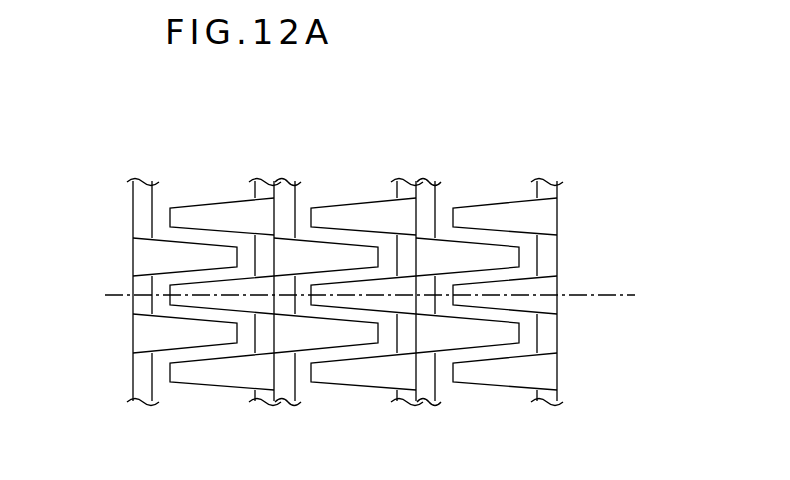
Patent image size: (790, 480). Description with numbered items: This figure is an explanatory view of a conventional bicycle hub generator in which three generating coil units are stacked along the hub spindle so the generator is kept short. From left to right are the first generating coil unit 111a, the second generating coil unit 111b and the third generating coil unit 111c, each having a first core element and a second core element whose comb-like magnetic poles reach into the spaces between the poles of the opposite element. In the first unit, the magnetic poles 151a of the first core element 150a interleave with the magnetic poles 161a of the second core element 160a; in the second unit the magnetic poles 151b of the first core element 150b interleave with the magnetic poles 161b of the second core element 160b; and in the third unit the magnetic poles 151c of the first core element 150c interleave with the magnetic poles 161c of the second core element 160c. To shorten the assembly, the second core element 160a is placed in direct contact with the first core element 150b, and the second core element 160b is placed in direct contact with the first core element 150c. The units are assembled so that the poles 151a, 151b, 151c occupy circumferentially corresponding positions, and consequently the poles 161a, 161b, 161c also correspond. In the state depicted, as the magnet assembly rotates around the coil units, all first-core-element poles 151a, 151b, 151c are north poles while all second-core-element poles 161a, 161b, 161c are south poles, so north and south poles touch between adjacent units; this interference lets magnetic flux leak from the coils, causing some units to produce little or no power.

The first generating coil unit 111a is at (197, 183).
The second generating coil unit 111b is at (356, 183).
The third generating coil unit 111c is at (480, 186).
The first core element 150a is at (125, 372).
The first core element 150b is at (297, 390).
The first core element 150c is at (440, 392).
The magnetic poles 151a is at (182, 253).
The magnetic poles 151b is at (337, 257).
The magnetic poles 151c is at (503, 258).
The second core element 160a is at (222, 388).
The second core element 160b is at (344, 389).
The second core element 160c is at (560, 338).
The magnetic poles 161a is at (212, 218).
The magnetic poles 161b is at (361, 217).
The magnetic poles 161c is at (495, 213).